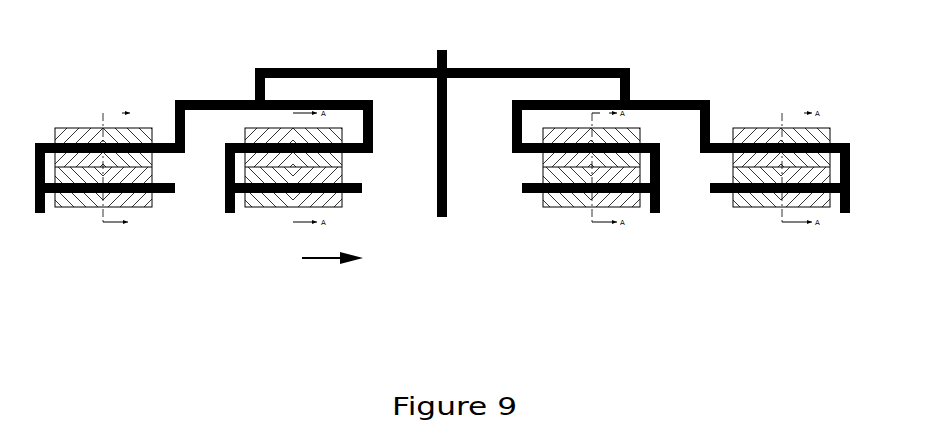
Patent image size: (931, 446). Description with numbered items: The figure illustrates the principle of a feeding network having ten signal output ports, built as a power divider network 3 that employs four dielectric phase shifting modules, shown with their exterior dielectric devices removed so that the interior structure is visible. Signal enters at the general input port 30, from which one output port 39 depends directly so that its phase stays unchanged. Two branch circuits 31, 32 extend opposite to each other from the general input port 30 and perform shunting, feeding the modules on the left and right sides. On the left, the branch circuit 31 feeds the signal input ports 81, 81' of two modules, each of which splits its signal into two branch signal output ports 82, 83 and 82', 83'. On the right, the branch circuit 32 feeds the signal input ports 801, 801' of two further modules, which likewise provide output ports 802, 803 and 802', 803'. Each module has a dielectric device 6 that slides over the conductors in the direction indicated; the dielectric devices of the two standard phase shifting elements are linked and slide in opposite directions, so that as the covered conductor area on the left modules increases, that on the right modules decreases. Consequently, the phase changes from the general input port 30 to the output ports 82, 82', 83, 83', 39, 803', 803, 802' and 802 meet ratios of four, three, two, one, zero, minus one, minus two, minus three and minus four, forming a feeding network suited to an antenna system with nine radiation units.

The power divider network 3 is at (447, 133).
The dielectric device 6 is at (82, 135).
The general input port 30 is at (441, 123).
The branch circuit 31 is at (382, 68).
The branch circuit 32 is at (580, 68).
The output port 39 is at (441, 213).
The signal input port 81 is at (122, 156).
The signal output port 82 is at (116, 189).
The signal output port 83 is at (39, 189).
The signal input port 81' is at (314, 156).
The signal output port 82' is at (308, 188).
The signal output port 83' is at (231, 188).
The signal input port 801 is at (759, 156).
The signal output port 802 is at (762, 191).
The signal output port 803 is at (849, 190).
The signal input port 801' is at (566, 157).
The signal output port 802' is at (564, 193).
The signal output port 803' is at (653, 190).